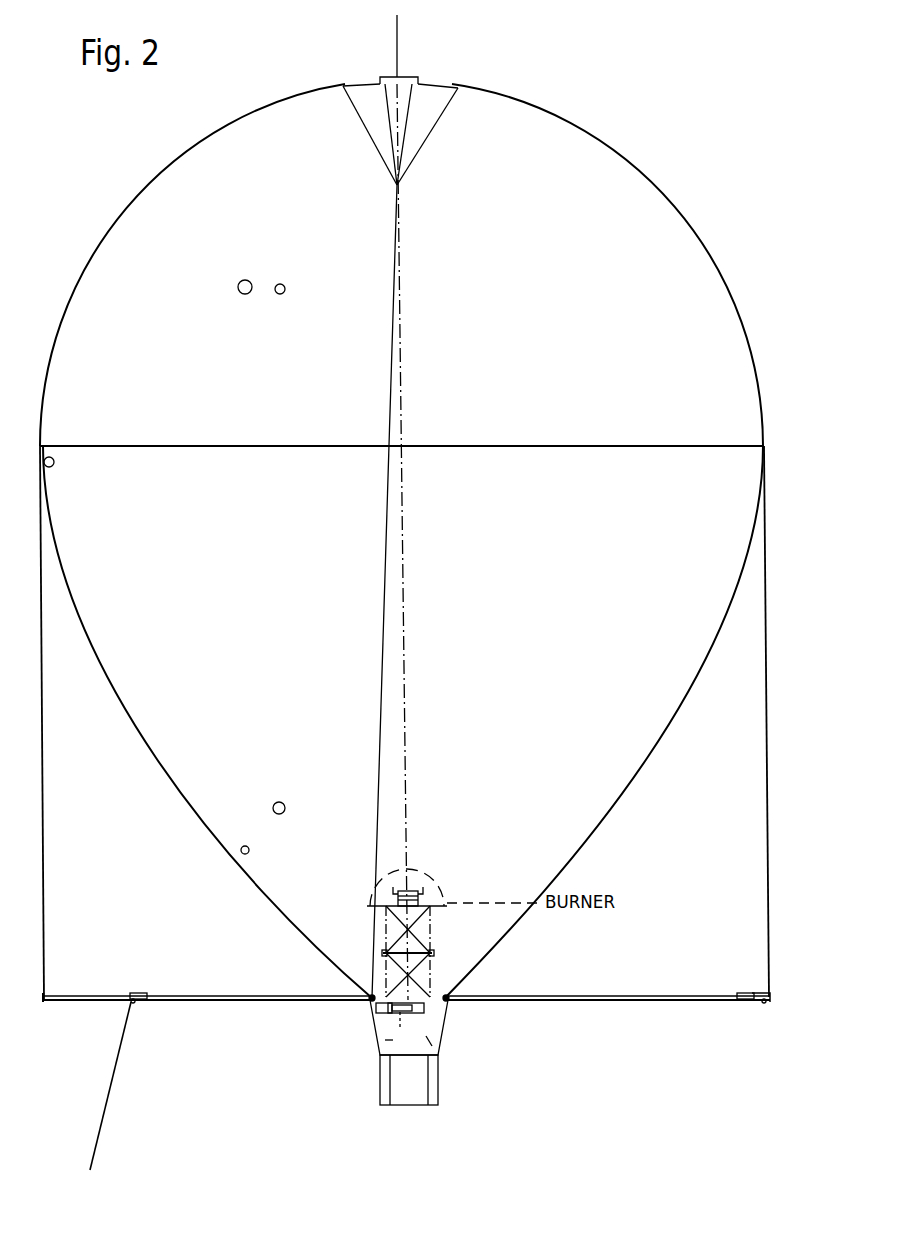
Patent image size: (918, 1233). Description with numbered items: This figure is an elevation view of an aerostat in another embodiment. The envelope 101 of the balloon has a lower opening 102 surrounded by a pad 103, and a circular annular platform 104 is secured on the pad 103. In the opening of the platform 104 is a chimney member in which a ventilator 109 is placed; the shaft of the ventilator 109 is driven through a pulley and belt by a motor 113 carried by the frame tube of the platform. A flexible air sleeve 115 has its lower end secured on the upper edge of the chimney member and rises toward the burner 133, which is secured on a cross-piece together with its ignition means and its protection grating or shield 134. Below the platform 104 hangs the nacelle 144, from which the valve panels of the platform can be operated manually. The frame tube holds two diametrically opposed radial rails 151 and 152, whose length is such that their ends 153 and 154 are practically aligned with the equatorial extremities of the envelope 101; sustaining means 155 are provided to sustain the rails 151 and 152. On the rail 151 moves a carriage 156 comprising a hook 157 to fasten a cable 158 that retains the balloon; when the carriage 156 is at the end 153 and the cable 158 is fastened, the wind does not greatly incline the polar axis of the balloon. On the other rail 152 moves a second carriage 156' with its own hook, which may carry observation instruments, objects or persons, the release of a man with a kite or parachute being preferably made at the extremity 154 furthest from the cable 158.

The envelope 101 is at (636, 157).
The lower opening 102 is at (440, 990).
The pad 103 is at (452, 994).
The circular annular platform 104 is at (453, 1003).
The ventilator 109 is at (392, 1015).
The motor 113 is at (376, 1013).
The flexible air sleeve 115 is at (430, 927).
The burner 133 is at (427, 899).
The protection grating or shield 134 is at (418, 870).
The nacelle 144 is at (430, 1078).
The radial rail 151 is at (230, 997).
The radial rail 152 is at (553, 997).
The rail end 153 is at (40, 1004).
The rail end 154 is at (768, 998).
The sustaining means 155 is at (42, 872).
The carriage 156 is at (131, 977).
The carriage 156' is at (723, 968).
The hook 157 is at (133, 1004).
The cable 158 is at (110, 1090).